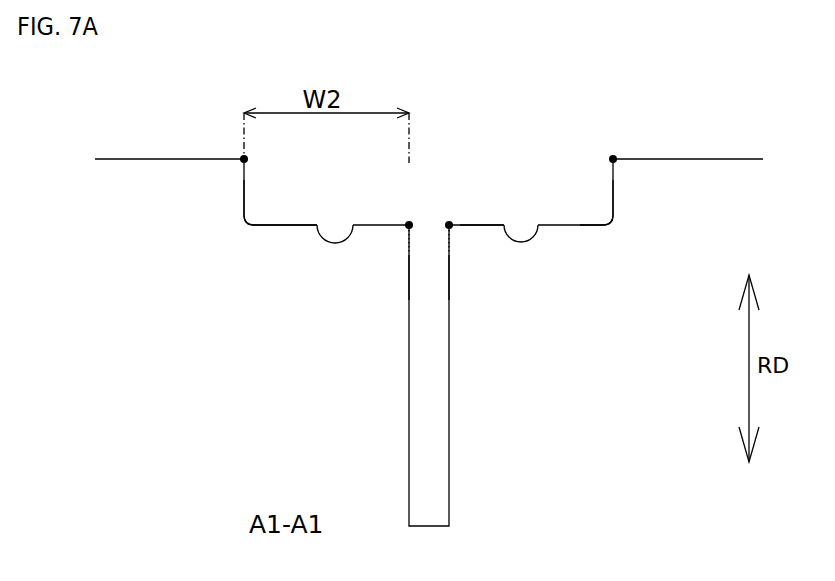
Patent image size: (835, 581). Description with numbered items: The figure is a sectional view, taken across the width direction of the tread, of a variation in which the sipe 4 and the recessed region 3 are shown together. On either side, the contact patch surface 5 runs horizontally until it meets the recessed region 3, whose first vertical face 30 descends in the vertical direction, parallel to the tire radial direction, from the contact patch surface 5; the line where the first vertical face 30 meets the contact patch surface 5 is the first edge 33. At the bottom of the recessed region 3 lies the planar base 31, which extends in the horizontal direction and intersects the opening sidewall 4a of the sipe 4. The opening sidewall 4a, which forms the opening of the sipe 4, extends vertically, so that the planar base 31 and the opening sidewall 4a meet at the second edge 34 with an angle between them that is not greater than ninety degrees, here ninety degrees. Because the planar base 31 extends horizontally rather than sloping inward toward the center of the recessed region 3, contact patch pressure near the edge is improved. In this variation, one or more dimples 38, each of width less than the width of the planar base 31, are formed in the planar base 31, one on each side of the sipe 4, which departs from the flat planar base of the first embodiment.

The recessed region 3 is at (530, 207).
The sipe 4 is at (426, 418).
The opening sidewall 4a is at (410, 275).
The contact patch surface 5 is at (177, 158).
The first vertical face 30 is at (243, 196).
The planar base 31 is at (305, 225).
The first edge 33 is at (243, 158).
The second edge 34 is at (409, 224).
The dimple 38 is at (343, 233).